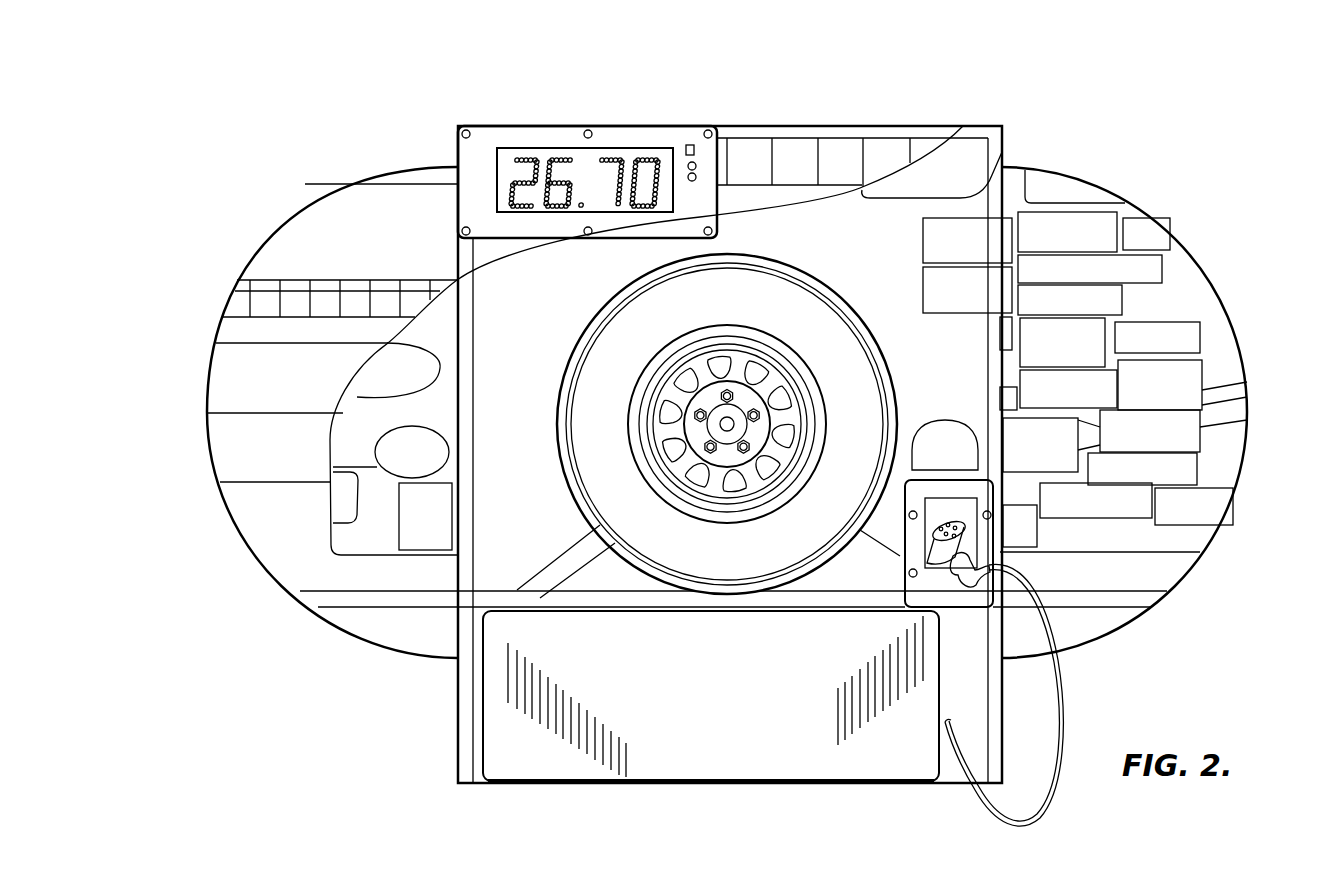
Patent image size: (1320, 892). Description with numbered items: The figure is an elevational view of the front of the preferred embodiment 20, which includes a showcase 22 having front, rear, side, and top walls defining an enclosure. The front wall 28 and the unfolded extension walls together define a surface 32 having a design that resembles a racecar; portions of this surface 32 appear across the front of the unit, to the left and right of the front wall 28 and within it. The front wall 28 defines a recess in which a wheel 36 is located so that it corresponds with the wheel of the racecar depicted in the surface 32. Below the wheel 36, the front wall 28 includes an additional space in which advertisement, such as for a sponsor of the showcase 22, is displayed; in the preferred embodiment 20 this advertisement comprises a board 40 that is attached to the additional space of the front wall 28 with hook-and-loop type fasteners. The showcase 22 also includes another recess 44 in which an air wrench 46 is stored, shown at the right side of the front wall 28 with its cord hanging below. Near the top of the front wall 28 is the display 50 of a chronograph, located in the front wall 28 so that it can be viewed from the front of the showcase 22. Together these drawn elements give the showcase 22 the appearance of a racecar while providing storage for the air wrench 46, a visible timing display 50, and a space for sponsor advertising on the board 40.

The preferred embodiment 20 is at (250, 131).
The showcase 22 is at (878, 103).
The front wall 28 is at (815, 222).
The surface 32 is at (392, 251).
The wheel 36 is at (596, 412).
The board 40 is at (640, 762).
The recess 44 is at (957, 515).
The air wrench 46 is at (975, 543).
The display 50 is at (584, 162).